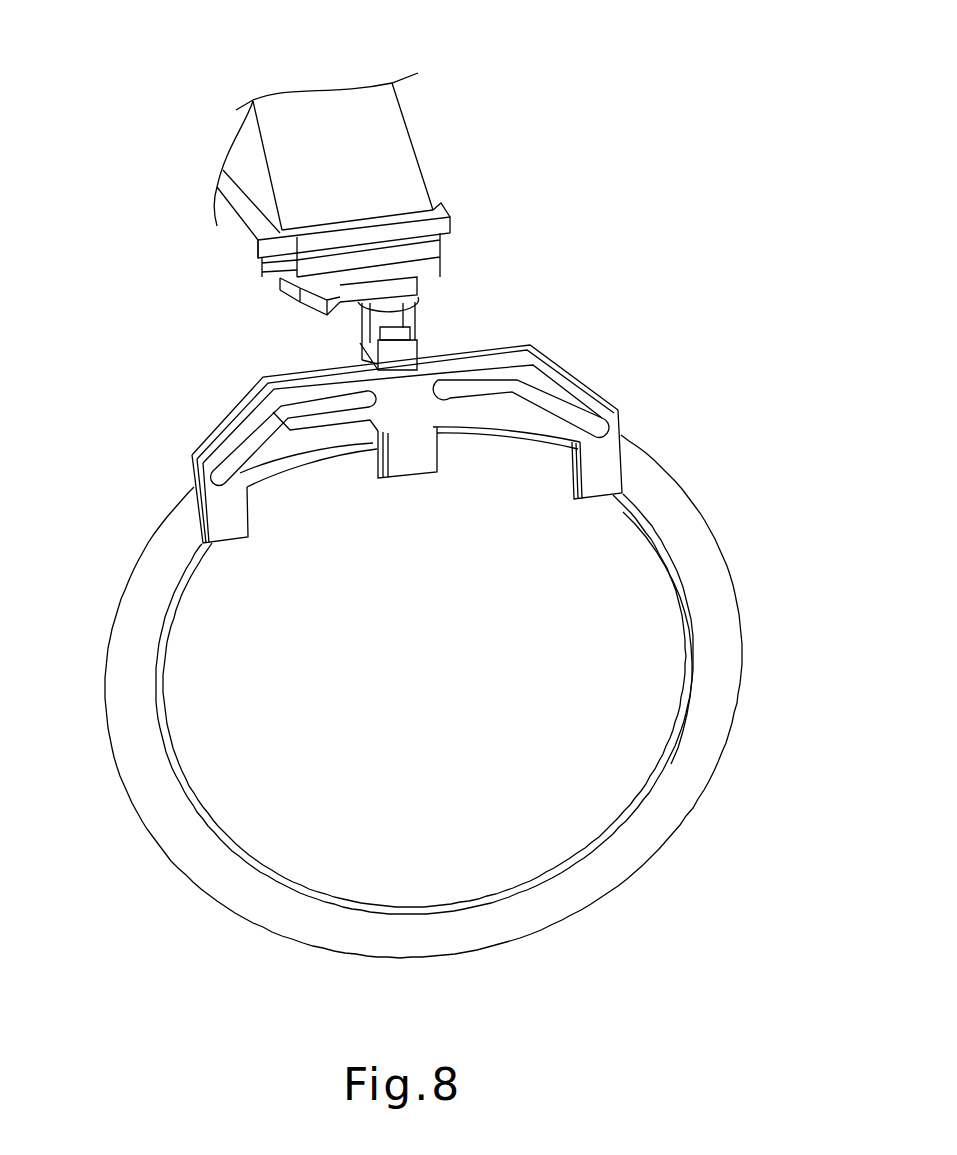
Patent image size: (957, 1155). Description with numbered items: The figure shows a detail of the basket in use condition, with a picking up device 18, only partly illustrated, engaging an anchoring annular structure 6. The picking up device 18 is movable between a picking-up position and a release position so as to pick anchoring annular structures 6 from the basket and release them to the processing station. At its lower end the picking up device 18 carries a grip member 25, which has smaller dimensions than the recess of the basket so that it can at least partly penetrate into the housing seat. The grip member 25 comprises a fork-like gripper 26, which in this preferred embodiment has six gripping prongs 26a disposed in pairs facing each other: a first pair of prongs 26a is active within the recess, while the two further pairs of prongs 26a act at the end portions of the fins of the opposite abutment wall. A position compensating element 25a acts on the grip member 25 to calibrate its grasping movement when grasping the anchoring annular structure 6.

The anchoring annular structure 6 is at (701, 568).
The picking up device 18 is at (442, 112).
The grip member 25 is at (449, 329).
The position compensating element 25a is at (286, 298).
The gripper 26 is at (407, 410).
The gripping prongs 26a is at (207, 438).